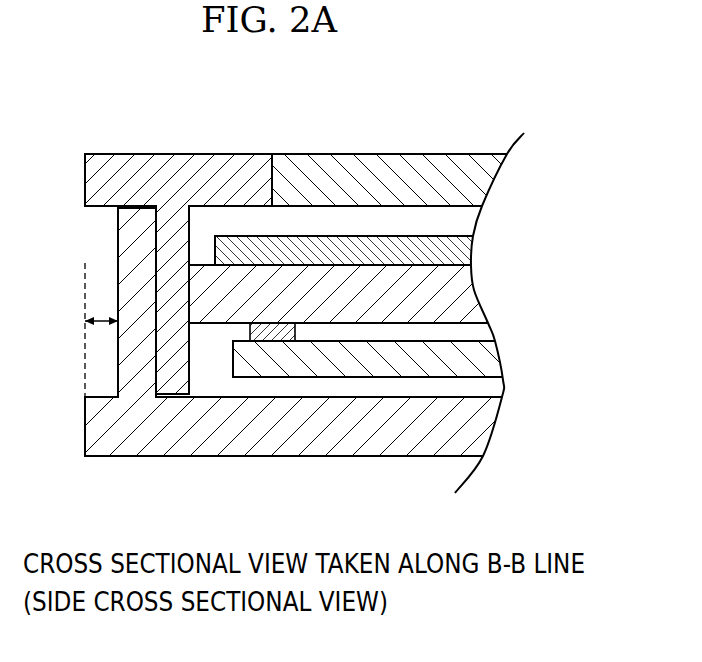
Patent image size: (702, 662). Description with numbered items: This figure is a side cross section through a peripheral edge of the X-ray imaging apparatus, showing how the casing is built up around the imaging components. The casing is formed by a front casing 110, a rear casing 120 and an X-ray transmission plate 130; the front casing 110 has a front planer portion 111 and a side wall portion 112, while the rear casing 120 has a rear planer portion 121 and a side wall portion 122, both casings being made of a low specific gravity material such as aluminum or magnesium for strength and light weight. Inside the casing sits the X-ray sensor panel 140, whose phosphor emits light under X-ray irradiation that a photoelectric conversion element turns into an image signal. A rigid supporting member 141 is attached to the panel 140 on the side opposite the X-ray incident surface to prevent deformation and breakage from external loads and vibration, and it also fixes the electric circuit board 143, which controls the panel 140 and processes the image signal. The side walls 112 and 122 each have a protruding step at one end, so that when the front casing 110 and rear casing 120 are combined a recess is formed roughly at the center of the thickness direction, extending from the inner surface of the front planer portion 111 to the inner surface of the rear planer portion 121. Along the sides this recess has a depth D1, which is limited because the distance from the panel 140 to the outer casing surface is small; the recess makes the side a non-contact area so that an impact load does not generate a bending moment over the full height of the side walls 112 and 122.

The front casing 110 is at (112, 153).
The front planer portion 111 is at (232, 168).
The side wall portion 112 is at (172, 227).
The X-ray transmission plate 130 is at (385, 175).
The X-ray sensor panel 140 is at (458, 248).
The rigid supporting member 141 is at (461, 286).
The electric circuit board 143 is at (480, 357).
The rear casing 120 is at (112, 456).
The rear planer portion 121 is at (277, 440).
The side wall portion 122 is at (133, 367).
The depth of the recess along the sides D1 is at (100, 318).